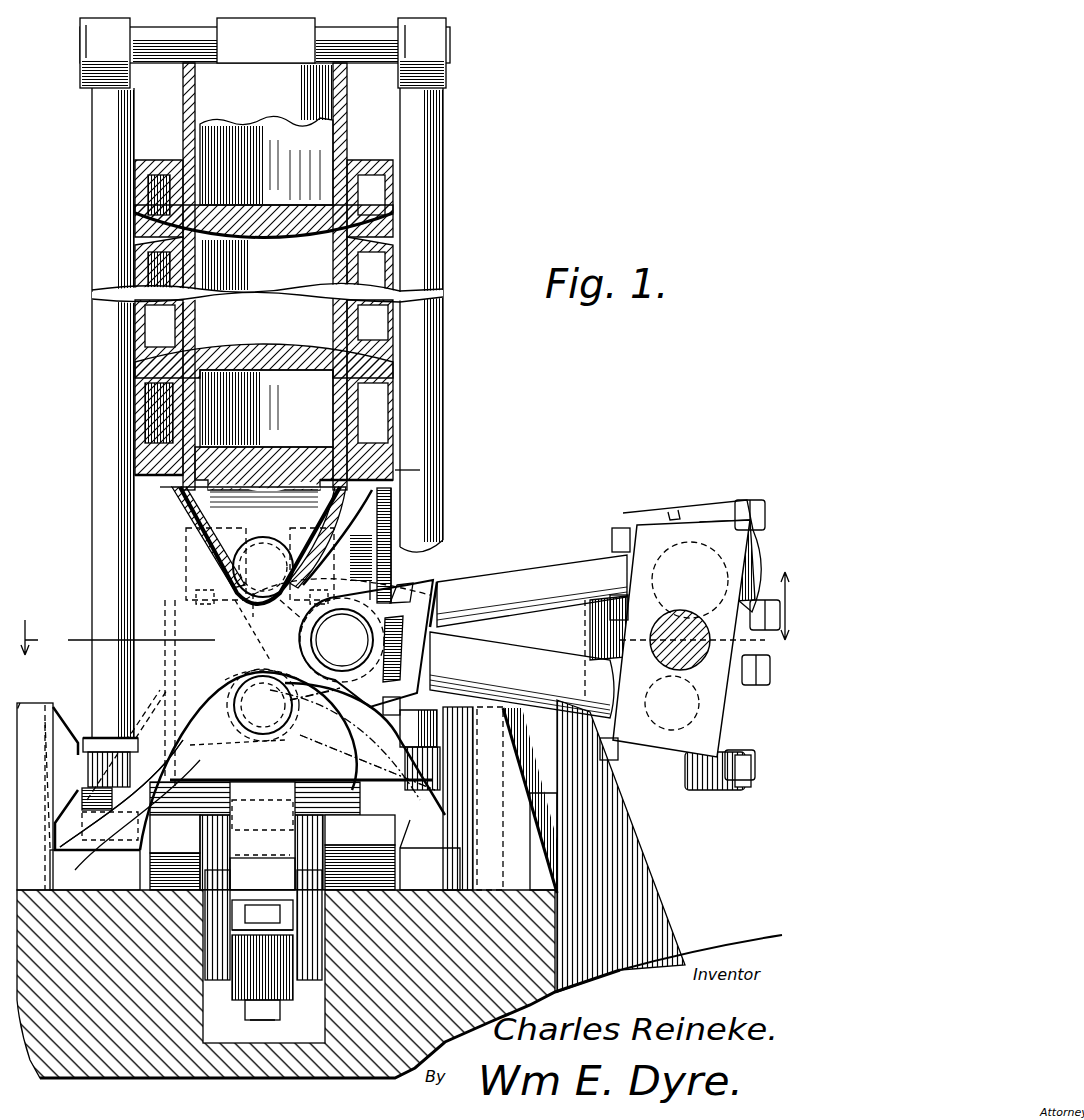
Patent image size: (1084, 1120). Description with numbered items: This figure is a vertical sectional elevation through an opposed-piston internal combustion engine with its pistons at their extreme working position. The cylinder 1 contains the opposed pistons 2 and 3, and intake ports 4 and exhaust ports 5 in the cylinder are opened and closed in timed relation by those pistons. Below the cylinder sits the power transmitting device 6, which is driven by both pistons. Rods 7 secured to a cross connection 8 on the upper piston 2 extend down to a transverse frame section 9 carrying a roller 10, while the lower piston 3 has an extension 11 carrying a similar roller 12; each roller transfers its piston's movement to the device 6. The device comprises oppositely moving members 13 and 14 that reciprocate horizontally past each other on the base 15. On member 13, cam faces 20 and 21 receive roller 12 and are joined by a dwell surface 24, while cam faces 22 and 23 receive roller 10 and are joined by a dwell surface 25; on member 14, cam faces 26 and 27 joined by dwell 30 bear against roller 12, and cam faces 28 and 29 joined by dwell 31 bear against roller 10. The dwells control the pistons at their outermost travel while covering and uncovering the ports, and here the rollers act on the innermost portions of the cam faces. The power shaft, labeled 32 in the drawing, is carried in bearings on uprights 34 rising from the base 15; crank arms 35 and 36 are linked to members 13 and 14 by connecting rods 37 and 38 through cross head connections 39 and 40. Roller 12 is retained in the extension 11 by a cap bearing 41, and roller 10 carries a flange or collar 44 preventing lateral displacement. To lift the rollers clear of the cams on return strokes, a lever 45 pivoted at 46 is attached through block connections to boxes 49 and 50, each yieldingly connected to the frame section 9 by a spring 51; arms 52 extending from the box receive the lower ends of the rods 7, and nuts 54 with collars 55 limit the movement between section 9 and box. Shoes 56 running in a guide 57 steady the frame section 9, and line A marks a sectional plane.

The cylinder 1 is at (345, 275).
The piston 2 is at (335, 145).
The piston 3 is at (330, 405).
The intake ports 4 is at (385, 225).
The exhaust ports 5 is at (390, 357).
The power transmitting device 6 is at (168, 618).
The rods 7 is at (105, 380).
The cross connection 8 is at (150, 40).
The transverse frame section 9 is at (100, 745).
The roller 10 is at (263, 705).
The extension 11 is at (259, 545).
The roller 12 is at (263, 567).
The oppositely moving member 13 is at (160, 568).
The oppositely moving member 14 is at (392, 540).
The base 15 is at (345, 1078).
The cam face 20 is at (215, 540).
The cam face 21 is at (400, 530).
The cam face 22 is at (175, 755).
The cam face 23 is at (310, 728).
The dwell surface 24 is at (244, 630).
The dwell surface 25 is at (250, 675).
The cam face 26 is at (172, 487).
The cam face 27 is at (392, 494).
The cam face 28 is at (225, 745).
The cam face 29 is at (355, 760).
The intermediate cam portion or dwell 30 is at (366, 647).
The intermediate cam portion or dwell 31 is at (342, 640).
The shaft 32 is at (665, 622).
The uprights 34 is at (669, 846).
The arm of the crank 35 is at (703, 530).
The arm of the crank 36 is at (650, 525).
The connecting rod 37 is at (528, 657).
The connecting rod 38 is at (528, 591).
The cross head connection 39 is at (440, 582).
The cross head connection 40 is at (740, 505).
The cap bearing 41 is at (420, 462).
The flange or collar 44 is at (120, 905).
The lever 45 is at (240, 990).
The pivot 46 is at (220, 955).
The box 49 is at (262, 874).
The box 50 is at (300, 1010).
The spring 51 is at (300, 782).
The arms 52 is at (262, 836).
The nuts 54 is at (301, 805).
The collars 55 is at (432, 738).
The shoes 56 is at (65, 740).
The guide 57 is at (30, 708).
The section line A is at (405, 603).